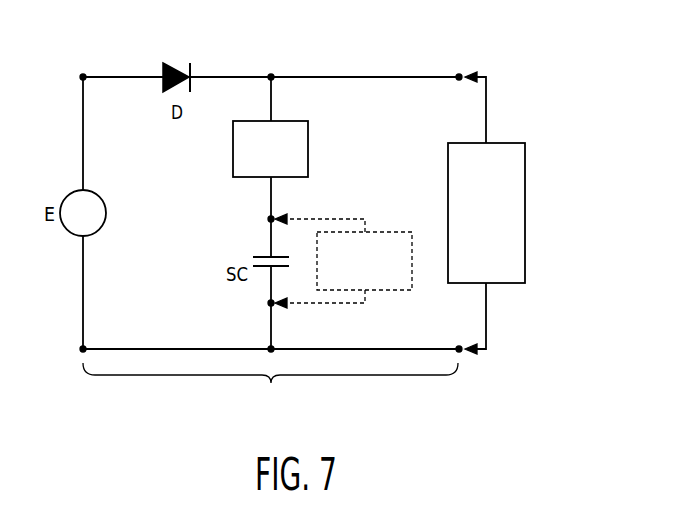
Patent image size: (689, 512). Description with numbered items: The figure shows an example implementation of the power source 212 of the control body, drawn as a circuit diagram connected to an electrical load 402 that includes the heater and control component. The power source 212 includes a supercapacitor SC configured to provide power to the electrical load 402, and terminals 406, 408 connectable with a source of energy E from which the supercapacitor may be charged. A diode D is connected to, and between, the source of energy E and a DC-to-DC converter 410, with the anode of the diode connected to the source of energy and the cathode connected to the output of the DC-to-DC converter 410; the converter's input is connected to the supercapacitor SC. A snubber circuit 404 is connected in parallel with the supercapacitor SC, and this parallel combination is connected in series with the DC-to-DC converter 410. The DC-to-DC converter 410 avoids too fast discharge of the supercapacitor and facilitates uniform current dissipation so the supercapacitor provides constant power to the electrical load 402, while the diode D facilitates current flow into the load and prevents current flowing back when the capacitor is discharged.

The terminal 408 is at (83, 77).
The DC-to-DC converter 410 is at (310, 147).
The snubber circuit 404 is at (383, 231).
The electrical load 402 is at (500, 141).
The terminal 406 is at (86, 347).
The power source 212 is at (270, 393).